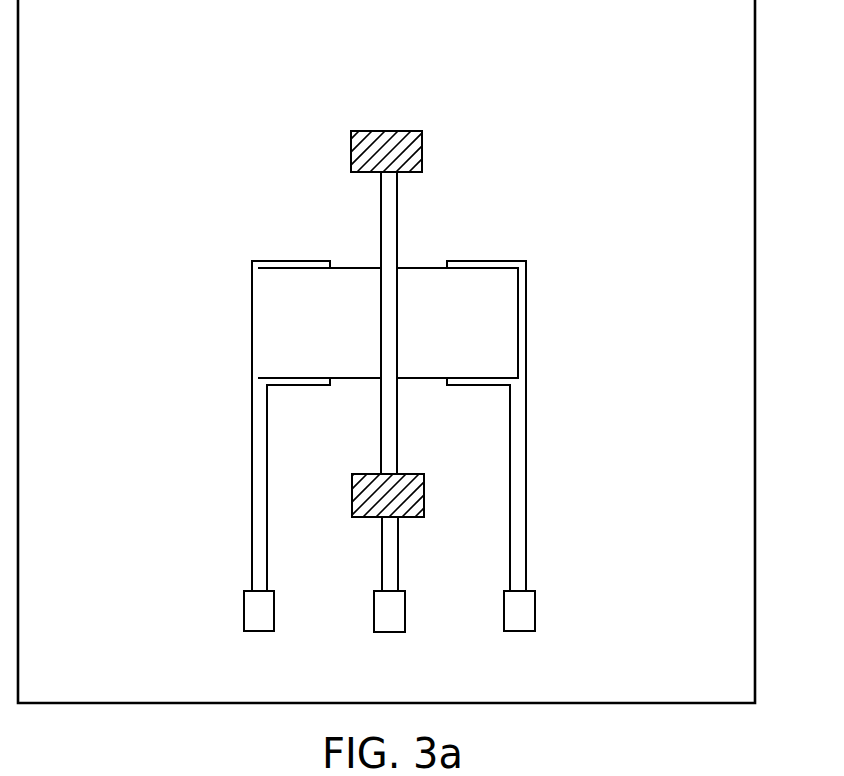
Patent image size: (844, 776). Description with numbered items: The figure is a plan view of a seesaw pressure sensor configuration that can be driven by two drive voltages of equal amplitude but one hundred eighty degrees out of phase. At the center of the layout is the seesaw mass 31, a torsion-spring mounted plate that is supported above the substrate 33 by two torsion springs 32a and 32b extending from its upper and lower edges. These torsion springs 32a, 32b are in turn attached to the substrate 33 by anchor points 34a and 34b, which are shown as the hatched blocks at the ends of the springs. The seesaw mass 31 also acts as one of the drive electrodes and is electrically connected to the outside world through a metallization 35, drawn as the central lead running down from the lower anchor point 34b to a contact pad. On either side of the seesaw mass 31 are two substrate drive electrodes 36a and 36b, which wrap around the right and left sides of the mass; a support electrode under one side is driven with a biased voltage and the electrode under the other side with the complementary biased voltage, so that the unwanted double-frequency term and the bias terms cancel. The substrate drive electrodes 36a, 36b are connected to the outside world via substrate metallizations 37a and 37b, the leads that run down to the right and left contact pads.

The seesaw mass 31 is at (275, 293).
The torsion spring 32a is at (397, 212).
The torsion spring 32b is at (397, 419).
The substrate 33 is at (733, 92).
The anchor point 34a is at (394, 146).
The anchor point 34b is at (424, 502).
The metallization 35 is at (399, 565).
The substrate drive electrode 36a is at (526, 303).
The substrate drive electrode 36b is at (252, 346).
The substrate metallization 37a is at (526, 462).
The substrate metallization 37b is at (252, 462).